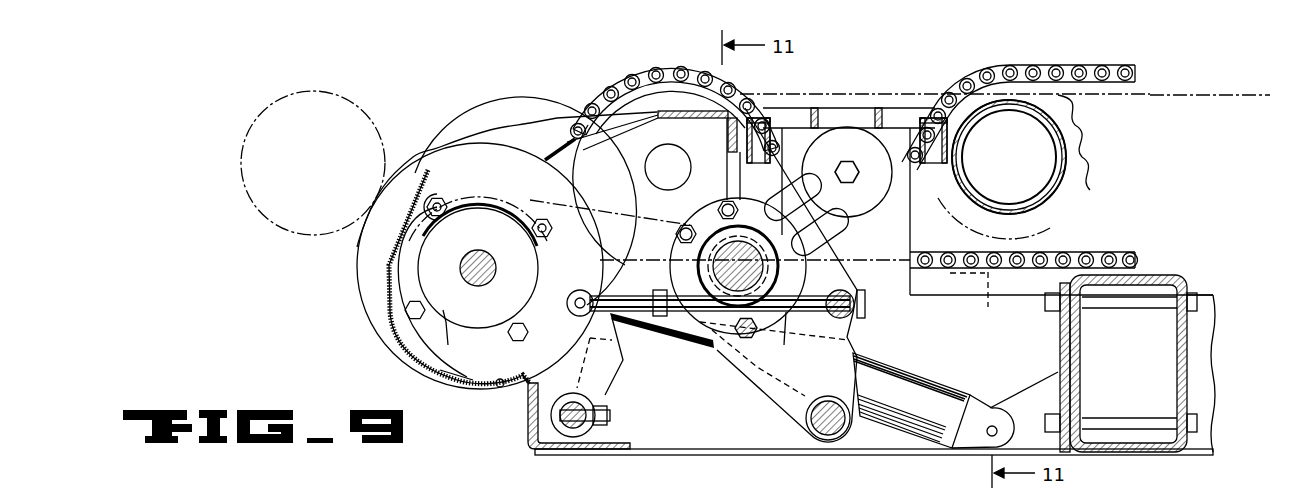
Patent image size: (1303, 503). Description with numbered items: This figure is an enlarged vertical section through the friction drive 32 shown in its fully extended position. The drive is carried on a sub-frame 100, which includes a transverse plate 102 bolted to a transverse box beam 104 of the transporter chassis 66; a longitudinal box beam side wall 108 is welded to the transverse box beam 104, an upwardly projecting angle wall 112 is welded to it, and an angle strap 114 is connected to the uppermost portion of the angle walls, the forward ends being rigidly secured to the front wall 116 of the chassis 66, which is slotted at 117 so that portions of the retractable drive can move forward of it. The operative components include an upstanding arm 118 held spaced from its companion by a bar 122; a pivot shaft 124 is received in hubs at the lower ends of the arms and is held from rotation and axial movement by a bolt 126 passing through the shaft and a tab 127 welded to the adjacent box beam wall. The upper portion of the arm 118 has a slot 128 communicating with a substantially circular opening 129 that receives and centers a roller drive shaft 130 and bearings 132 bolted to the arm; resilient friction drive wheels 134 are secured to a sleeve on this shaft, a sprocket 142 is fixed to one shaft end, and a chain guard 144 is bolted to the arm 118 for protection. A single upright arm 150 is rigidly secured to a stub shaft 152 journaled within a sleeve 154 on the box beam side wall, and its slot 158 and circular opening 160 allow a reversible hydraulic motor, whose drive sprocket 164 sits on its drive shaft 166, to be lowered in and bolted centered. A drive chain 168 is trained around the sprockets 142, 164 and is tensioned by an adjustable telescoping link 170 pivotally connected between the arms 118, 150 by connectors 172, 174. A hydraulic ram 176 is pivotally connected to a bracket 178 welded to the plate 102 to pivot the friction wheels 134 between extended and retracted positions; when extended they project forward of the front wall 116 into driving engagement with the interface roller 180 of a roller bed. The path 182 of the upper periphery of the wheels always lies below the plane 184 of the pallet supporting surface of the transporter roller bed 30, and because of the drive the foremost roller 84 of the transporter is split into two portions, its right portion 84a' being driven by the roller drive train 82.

The interface roller 180 is at (243, 148).
The friction drive 32 is at (437, 100).
The path of travel of the upper peripheral surface of the friction wheels 182 is at (530, 120).
The friction drive wheels 134 is at (363, 299).
The upstanding arm 118 is at (426, 342).
The slot 128 is at (388, 281).
The chain guard 144 is at (448, 382).
The bearings 132 is at (478, 266).
The roller drive shaft 130 is at (492, 268).
The sprocket 142 is at (521, 195).
The circular opening 129 is at (462, 348).
The angle wall 112 is at (637, 178).
The drive chain 168 is at (597, 172).
The angle strap 114 is at (715, 159).
The right portion of the foremost roller 84a' is at (671, 110).
The longitudinal box beam side wall 108 is at (874, 281).
The drive sprocket 164 is at (775, 270).
The circular opening 160 is at (780, 285).
The drive shaft 166 is at (770, 243).
The slot 158 is at (700, 218).
The connector 172 is at (572, 308).
The connector 174 is at (851, 314).
The single upright arm 150 is at (850, 343).
The adjustable telescoping link 170 is at (779, 336).
The stub shaft 152 is at (828, 400).
The sleeve 154 is at (806, 418).
The bar 122 is at (620, 369).
The hydraulic ram 176 is at (945, 400).
The bracket 178 is at (1042, 385).
The sub-frame 100 is at (1075, 345).
The transverse plate 102 is at (1068, 388).
The transverse box beam 104 is at (1188, 345).
The transporter chassis 66 is at (1222, 402).
The front wall 116 is at (527, 421).
The slot 117 is at (528, 389).
The bolt 126 is at (597, 412).
The tab 127 is at (598, 424).
The pivot shaft 124 is at (573, 432).
The sprocket 84 is at (1068, 197).
The roller bed 30 is at (1094, 136).
The roller drive train 82 is at (1106, 60).
The plane of the pallet supporting surface 184 is at (1222, 95).